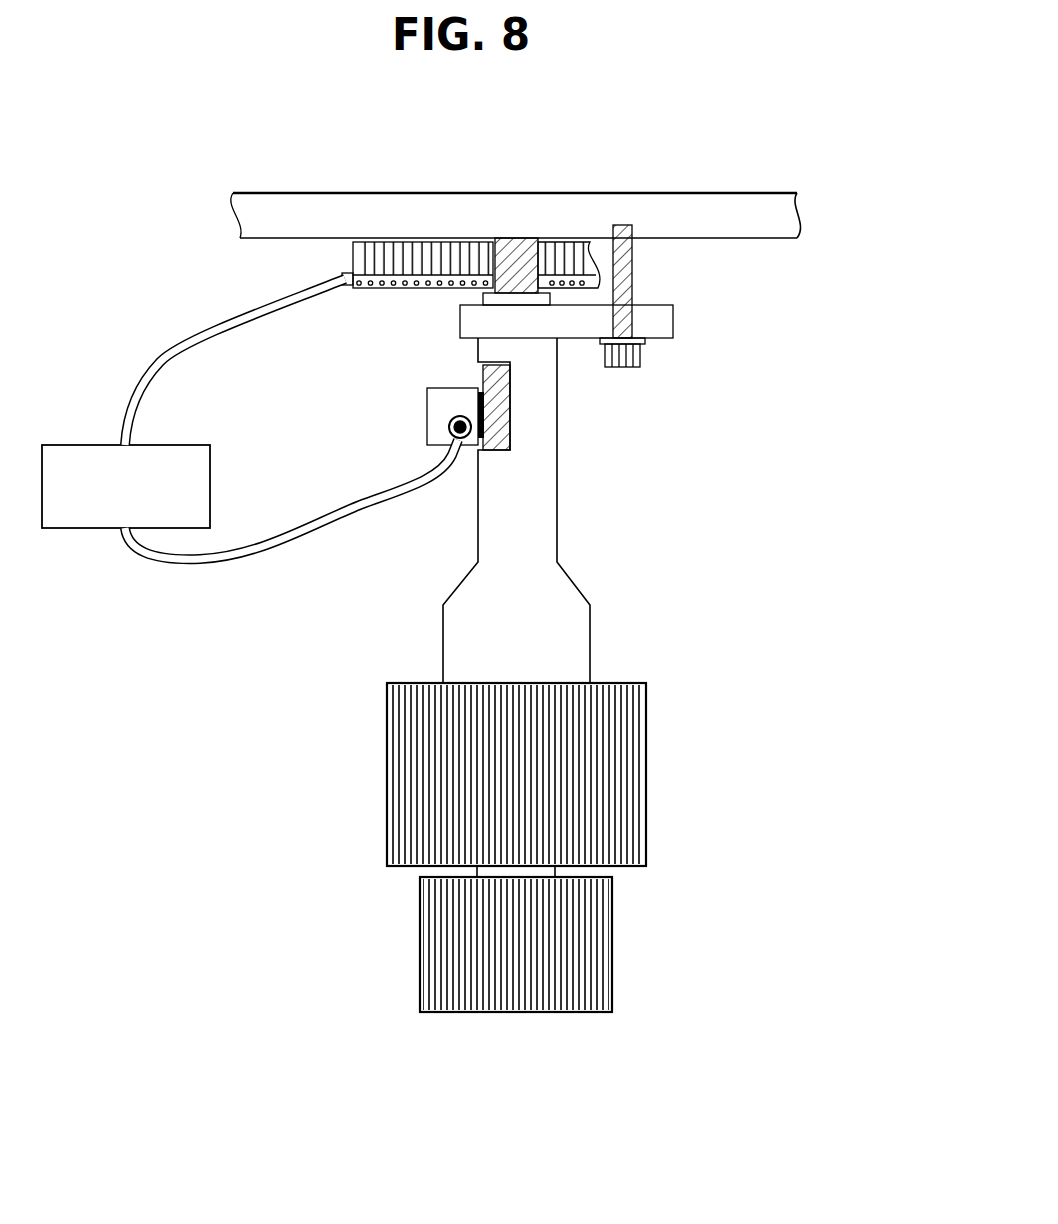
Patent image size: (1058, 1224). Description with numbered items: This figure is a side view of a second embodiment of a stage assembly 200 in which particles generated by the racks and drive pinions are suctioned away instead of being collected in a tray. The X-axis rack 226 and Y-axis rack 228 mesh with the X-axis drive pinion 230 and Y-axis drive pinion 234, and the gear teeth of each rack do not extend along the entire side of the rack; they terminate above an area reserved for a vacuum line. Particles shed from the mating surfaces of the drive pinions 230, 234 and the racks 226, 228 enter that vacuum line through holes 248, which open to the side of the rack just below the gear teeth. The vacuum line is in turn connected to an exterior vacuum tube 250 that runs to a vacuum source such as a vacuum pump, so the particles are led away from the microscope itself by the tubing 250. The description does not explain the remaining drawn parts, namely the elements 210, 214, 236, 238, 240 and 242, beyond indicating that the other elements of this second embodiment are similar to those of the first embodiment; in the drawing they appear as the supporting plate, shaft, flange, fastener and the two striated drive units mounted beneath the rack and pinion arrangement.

The stage assembly 200 is at (768, 415).
The shaft 210 is at (590, 622).
The platen 214 is at (797, 212).
The X-axis rack 226 is at (370, 250).
The Y-axis rack 228 is at (438, 410).
The X-axis drive pinion 230 is at (520, 245).
The Y-axis drive pinion 234 is at (486, 372).
The flange 236 is at (673, 322).
The bolt 238 is at (622, 368).
The encoder 240 is at (612, 944).
The motor 242 is at (646, 772).
The holes 248 is at (428, 285).
The exterior vacuum tube 250 is at (285, 305).